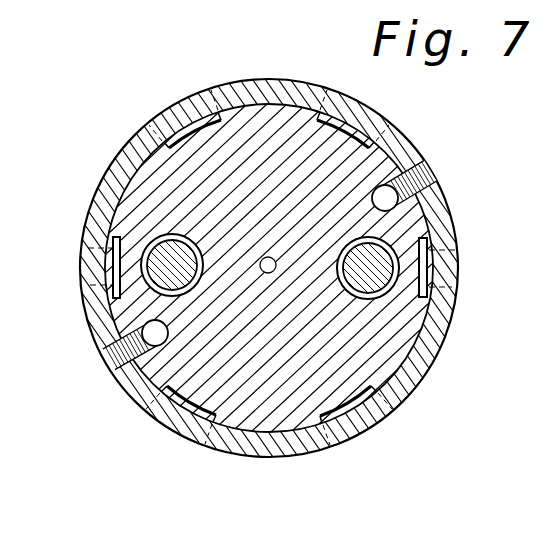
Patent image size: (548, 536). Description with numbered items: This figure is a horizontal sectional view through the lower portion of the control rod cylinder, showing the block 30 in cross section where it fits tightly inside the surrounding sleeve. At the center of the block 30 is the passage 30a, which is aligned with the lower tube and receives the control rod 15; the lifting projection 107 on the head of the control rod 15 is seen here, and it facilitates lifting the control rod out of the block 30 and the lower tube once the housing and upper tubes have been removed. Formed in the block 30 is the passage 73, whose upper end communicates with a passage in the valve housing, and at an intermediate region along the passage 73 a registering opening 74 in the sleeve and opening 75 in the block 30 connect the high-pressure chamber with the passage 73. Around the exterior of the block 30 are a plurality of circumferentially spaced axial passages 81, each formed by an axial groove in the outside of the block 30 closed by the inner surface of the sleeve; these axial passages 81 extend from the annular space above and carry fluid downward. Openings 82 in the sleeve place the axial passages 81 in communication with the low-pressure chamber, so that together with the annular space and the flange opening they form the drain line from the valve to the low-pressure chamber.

The block 30 is at (286, 227).
The passage 30a is at (153, 260).
The control rod 15 is at (150, 243).
The passage 73 is at (382, 178).
The opening 74 is at (428, 185).
The opening 75 is at (425, 173).
The axial passages 81 is at (190, 112).
The openings 82 is at (188, 95).
The lifting projection 107 is at (271, 273).